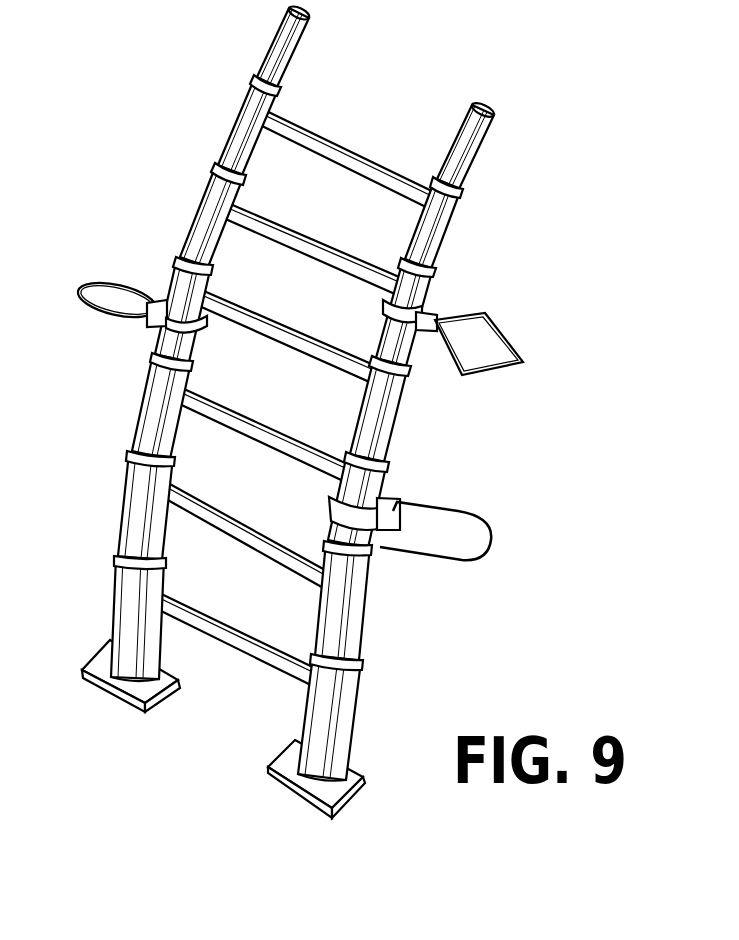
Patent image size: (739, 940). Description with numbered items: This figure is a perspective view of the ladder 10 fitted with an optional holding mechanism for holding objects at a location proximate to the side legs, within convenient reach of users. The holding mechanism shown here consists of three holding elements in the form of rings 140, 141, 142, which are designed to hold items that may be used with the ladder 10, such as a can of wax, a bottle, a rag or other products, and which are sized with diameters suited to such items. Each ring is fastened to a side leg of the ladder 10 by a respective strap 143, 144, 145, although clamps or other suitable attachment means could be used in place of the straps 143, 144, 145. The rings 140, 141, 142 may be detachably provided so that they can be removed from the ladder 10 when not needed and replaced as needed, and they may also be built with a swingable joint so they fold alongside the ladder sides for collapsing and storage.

The ladder 10 is at (190, 138).
The ring 140 is at (514, 337).
The ring 141 is at (458, 561).
The ring 142 is at (107, 279).
The strap 143 is at (428, 311).
The strap 144 is at (392, 497).
The strap 145 is at (153, 329).